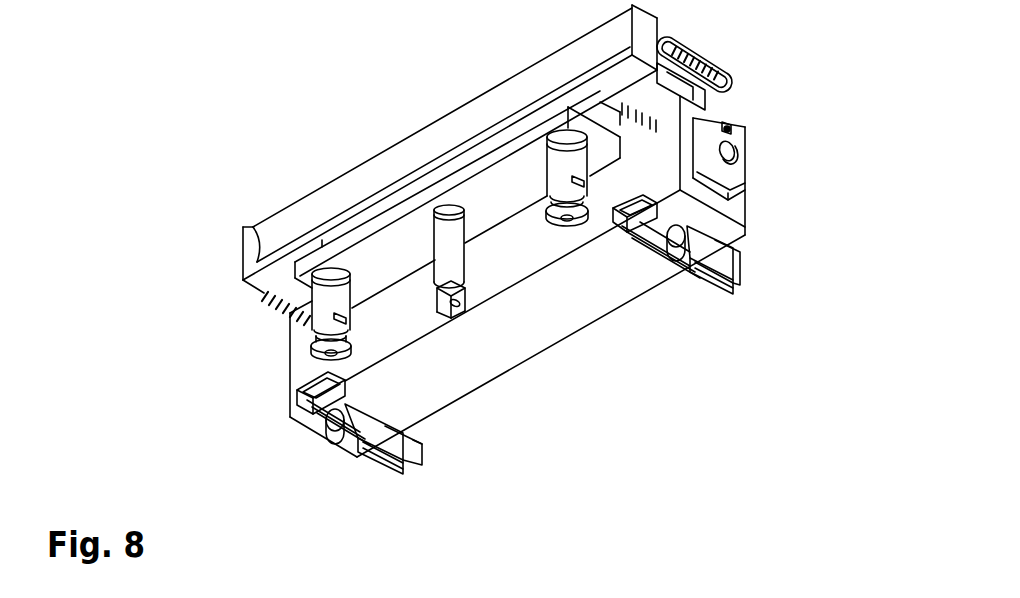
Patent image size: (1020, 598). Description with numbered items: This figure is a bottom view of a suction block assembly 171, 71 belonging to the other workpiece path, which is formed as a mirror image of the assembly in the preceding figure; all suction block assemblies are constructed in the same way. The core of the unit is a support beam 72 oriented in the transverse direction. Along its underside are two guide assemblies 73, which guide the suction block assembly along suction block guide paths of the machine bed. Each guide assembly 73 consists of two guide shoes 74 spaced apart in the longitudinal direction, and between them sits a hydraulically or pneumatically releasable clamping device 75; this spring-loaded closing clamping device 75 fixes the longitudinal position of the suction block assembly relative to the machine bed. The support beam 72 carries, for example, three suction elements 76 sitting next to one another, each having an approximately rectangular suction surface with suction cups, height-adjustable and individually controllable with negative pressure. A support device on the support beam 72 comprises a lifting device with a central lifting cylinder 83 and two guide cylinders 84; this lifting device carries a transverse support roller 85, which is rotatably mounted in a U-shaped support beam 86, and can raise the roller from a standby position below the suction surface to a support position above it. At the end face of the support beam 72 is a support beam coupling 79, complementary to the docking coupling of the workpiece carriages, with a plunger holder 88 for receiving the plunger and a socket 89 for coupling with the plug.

The suction block assembly 171 is at (351, 149).
The suction block assembly 71 is at (268, 202).
The support beam 72 is at (299, 360).
The guide assembly 73 is at (748, 262).
The guide shoe 74 is at (303, 396).
The clamping device 75 is at (350, 440).
The suction element 76 is at (720, 65).
The support beam coupling 79 is at (757, 150).
The lifting cylinder 83 is at (449, 265).
The guide cylinder 84 is at (322, 315).
The support roller 85 is at (298, 208).
The support beam 86 is at (238, 257).
The plunger holder 88 is at (781, 149).
The socket 89 is at (729, 128).